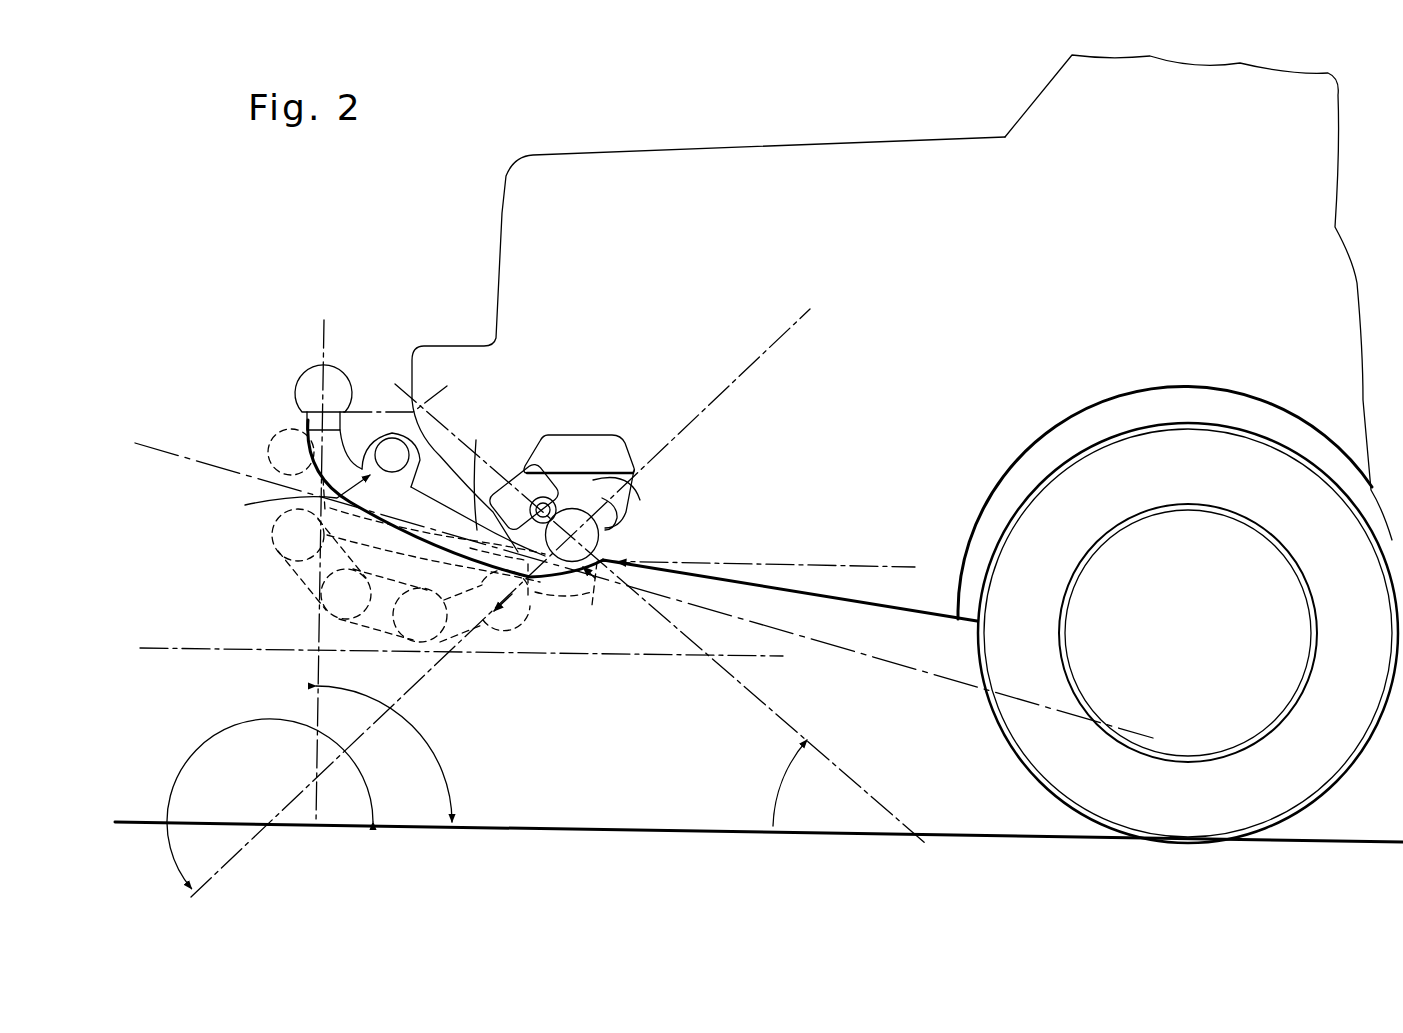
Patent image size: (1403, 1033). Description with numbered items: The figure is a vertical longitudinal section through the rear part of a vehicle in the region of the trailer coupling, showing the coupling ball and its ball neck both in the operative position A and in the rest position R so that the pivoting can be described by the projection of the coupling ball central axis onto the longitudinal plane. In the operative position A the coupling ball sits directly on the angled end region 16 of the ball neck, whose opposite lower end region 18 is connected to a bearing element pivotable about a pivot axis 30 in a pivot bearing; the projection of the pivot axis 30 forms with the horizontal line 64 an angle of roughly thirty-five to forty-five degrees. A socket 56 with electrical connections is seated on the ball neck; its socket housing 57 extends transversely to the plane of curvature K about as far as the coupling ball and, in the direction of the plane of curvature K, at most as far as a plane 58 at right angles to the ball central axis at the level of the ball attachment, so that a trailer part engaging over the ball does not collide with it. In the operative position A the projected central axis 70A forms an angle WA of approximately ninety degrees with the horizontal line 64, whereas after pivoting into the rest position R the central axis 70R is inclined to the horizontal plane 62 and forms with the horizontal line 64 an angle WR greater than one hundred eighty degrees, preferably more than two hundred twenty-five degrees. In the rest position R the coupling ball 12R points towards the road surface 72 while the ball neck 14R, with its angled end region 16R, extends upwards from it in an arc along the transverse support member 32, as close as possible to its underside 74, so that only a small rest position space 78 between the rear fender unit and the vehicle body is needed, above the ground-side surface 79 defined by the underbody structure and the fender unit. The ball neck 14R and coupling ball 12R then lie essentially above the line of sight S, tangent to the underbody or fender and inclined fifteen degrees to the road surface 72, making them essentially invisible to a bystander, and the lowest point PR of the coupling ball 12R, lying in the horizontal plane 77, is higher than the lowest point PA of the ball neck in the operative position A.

The angled end region 16 is at (306, 440).
The coupling ball central axis in operative position 70A is at (333, 347).
The socket housing 57 is at (368, 436).
The plane 58 is at (452, 379).
The transverse support member 32 is at (513, 463).
The underside 74 is at (570, 490).
The lower end region 18 is at (472, 472).
The ball neck in rest position 14R is at (637, 478).
The angled end region in rest position 16R is at (640, 516).
The rest position R is at (604, 548).
The horizontal plane 77 is at (838, 565).
The ground-side surface 79 is at (847, 604).
The socket 56 is at (290, 495).
The horizontal plane 62 is at (783, 660).
The lowest point of ball neck in operative position PA is at (540, 574).
The lowest point in rest position PR is at (574, 563).
The coupling ball in rest position 12R is at (581, 563).
The rest position space 78 is at (648, 572).
The road surface 72 is at (597, 822).
The pivot axis 30 is at (872, 793).
The horizontal line 64 is at (850, 834).
The angle in rest position WR is at (212, 737).
The angle in operative position WA is at (452, 773).
The coupling ball central axis in rest position 70R is at (297, 795).
The line of sight S is at (165, 452).
The plane of curvature K is at (807, 311).
The operative position A is at (301, 366).